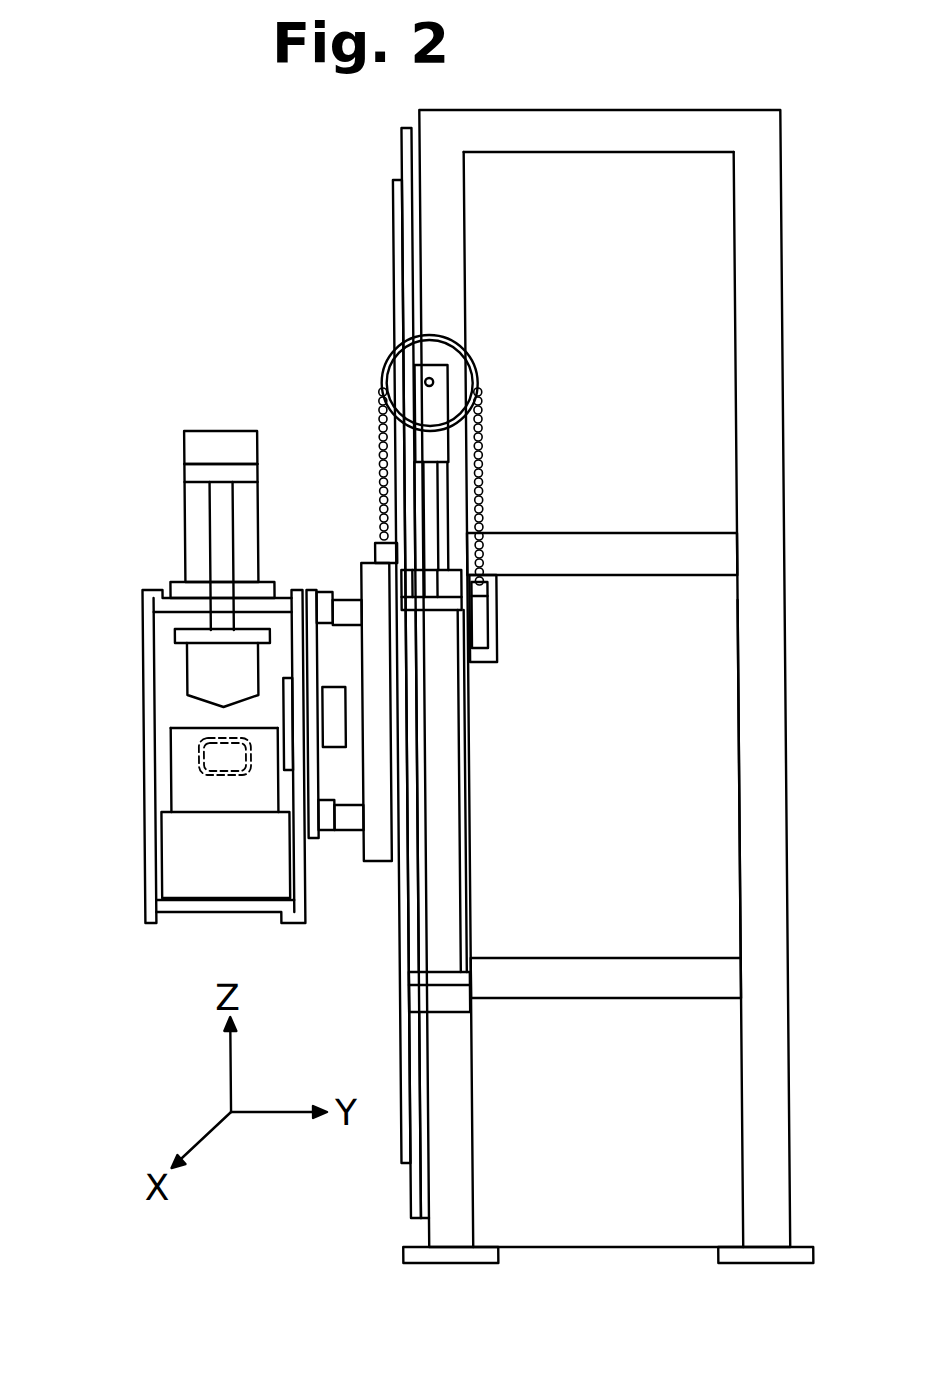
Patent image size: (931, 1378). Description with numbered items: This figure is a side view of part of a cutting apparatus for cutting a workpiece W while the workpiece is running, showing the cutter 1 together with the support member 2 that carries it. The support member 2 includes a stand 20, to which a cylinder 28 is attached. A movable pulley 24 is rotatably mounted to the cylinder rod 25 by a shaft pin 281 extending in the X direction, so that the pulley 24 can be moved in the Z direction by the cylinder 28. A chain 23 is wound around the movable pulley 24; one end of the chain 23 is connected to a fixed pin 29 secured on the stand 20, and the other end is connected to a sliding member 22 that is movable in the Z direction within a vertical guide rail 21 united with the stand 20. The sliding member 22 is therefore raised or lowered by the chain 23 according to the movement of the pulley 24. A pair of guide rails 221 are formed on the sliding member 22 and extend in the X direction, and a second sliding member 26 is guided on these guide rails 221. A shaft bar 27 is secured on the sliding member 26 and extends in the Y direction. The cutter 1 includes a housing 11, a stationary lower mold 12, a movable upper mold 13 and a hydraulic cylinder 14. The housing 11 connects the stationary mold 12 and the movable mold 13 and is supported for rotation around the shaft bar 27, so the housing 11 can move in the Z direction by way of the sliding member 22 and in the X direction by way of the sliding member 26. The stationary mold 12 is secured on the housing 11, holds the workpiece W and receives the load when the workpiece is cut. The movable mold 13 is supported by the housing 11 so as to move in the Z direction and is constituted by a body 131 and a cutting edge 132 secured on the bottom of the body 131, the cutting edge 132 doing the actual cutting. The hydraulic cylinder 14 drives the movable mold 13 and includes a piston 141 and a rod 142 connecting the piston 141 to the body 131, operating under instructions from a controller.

The cutter 1 is at (150, 570).
The housing 11 is at (240, 637).
The stationary lower mold 12 is at (172, 843).
The movable upper mold 13 is at (190, 633).
The body 131 is at (155, 665).
The cutting edge 132 is at (200, 682).
The hydraulic cylinder 14 is at (262, 440).
The piston 141 is at (195, 473).
The rod 142 is at (220, 516).
The support member 2 is at (762, 400).
The stand 20 is at (770, 702).
The vertical guide rail 21 is at (398, 244).
The sliding member 22 is at (372, 580).
The guide rails 221 is at (362, 572).
The chain 23 is at (378, 430).
The movable pulley 24 is at (442, 352).
The cylinder rod 25 is at (428, 378).
The sliding member 26 is at (325, 600).
The shaft bar 27 is at (348, 836).
The cylinder 28 is at (440, 768).
The shaft pin 281 is at (430, 512).
The fixed pin 29 is at (495, 604).
The workpiece W is at (203, 763).